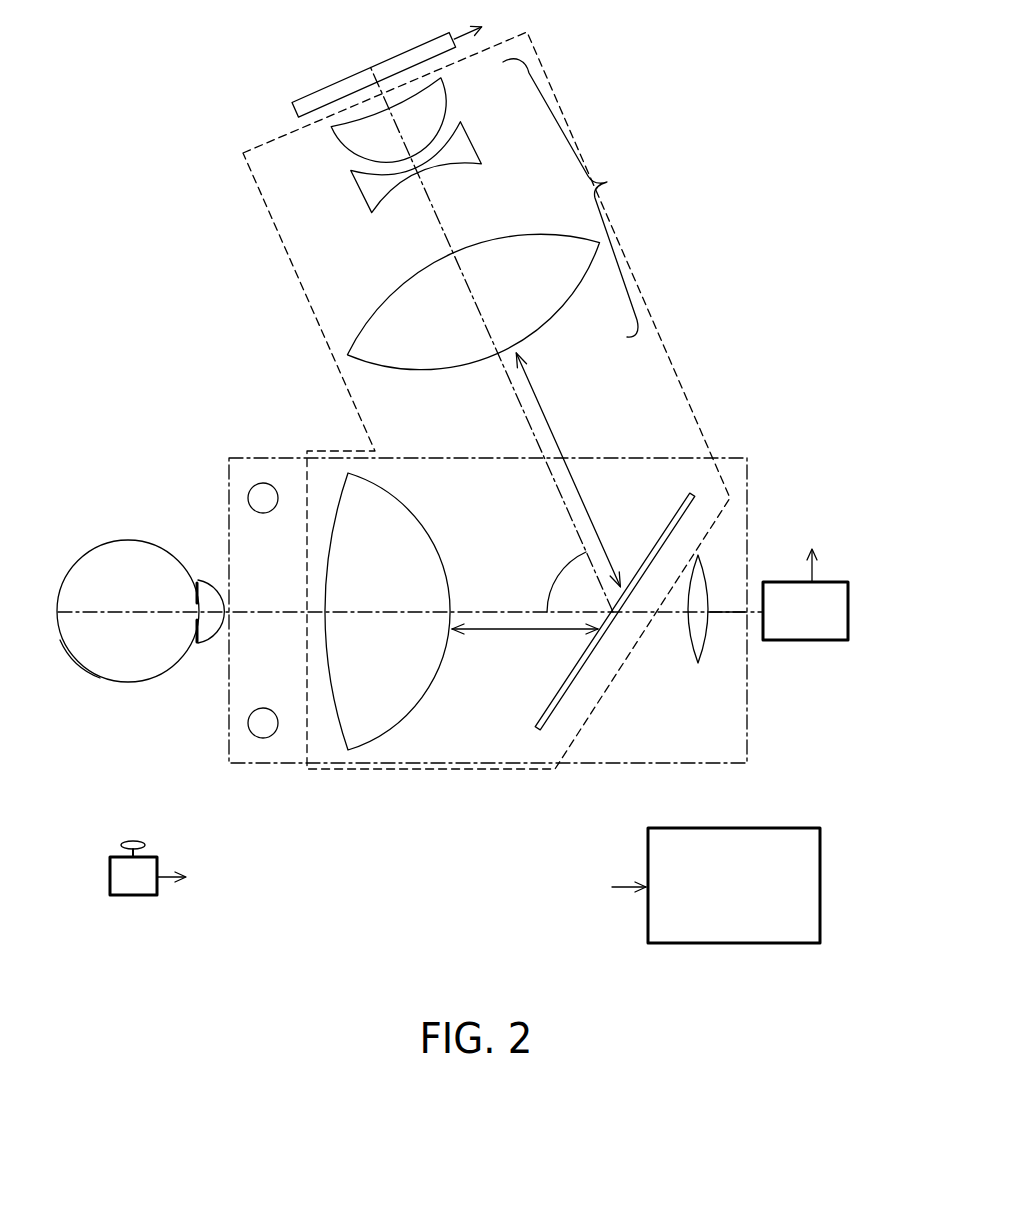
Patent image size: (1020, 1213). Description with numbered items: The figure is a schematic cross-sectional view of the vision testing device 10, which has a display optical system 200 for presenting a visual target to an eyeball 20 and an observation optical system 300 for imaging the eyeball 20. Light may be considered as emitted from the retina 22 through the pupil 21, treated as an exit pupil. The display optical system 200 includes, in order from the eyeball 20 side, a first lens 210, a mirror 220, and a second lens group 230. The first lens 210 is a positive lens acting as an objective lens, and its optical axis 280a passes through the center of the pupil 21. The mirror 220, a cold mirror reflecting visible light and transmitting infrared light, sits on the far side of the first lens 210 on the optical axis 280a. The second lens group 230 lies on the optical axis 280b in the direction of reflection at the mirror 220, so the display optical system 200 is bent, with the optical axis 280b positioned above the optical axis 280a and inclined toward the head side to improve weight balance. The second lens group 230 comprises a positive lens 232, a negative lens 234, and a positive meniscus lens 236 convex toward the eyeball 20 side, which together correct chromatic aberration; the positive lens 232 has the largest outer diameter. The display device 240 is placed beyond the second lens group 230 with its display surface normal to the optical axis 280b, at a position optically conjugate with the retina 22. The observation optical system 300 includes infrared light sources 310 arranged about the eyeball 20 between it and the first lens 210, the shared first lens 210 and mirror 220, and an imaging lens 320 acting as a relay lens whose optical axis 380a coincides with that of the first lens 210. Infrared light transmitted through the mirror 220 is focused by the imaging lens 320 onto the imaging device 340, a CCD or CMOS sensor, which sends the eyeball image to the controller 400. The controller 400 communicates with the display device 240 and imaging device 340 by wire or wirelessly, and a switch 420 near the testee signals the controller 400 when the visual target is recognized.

The vision testing device 10 is at (448, 505).
The eyeball 20 is at (130, 684).
The pupil 21 is at (193, 607).
The retina 22 is at (78, 646).
The display optical system 200 is at (666, 342).
The first lens 210 is at (392, 497).
The mirror 220 is at (557, 697).
The second lens group 230 is at (582, 198).
The positive lens 232 is at (580, 294).
The negative lens 234 is at (484, 160).
The positive meniscus lens 236 is at (451, 98).
The display device 240 is at (298, 92).
The optical axis of the first lens 280a is at (482, 610).
The optical axis of the second lens group 280b is at (538, 404).
The observation optical system 300 is at (740, 458).
The light source 310 is at (258, 482).
The imaging lens 320 is at (687, 626).
The imaging device 340 is at (812, 642).
The optical axis of the imaging lens 380a is at (730, 614).
The controller 400 is at (763, 828).
The switch 420 is at (132, 897).